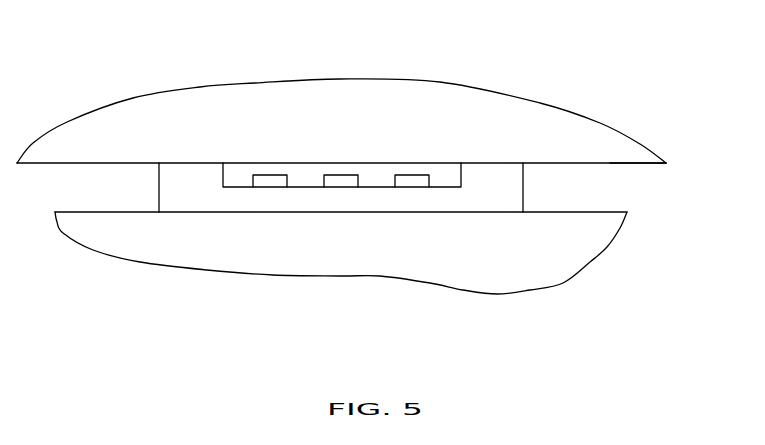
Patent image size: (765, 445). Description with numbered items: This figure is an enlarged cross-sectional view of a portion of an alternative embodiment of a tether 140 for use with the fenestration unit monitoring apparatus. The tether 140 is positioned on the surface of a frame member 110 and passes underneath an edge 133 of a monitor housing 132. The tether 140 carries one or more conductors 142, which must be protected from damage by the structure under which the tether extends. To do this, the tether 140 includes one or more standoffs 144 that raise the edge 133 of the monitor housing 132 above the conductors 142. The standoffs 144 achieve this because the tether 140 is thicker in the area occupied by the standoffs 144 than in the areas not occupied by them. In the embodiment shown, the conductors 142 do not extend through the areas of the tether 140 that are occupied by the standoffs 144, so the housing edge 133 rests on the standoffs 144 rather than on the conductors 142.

The frame member 110 is at (352, 243).
The monitor housing 132 is at (373, 107).
The edge of the monitor housing 133 is at (623, 163).
The tether 140 is at (523, 187).
The conductors 142 is at (409, 174).
The standoffs 144 is at (187, 180).